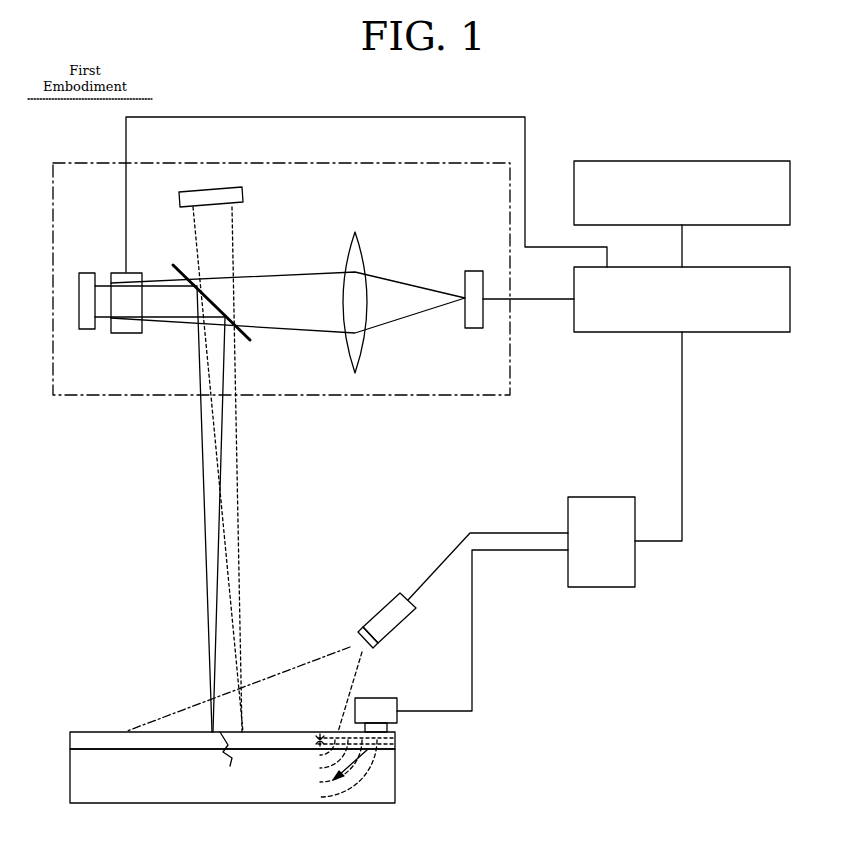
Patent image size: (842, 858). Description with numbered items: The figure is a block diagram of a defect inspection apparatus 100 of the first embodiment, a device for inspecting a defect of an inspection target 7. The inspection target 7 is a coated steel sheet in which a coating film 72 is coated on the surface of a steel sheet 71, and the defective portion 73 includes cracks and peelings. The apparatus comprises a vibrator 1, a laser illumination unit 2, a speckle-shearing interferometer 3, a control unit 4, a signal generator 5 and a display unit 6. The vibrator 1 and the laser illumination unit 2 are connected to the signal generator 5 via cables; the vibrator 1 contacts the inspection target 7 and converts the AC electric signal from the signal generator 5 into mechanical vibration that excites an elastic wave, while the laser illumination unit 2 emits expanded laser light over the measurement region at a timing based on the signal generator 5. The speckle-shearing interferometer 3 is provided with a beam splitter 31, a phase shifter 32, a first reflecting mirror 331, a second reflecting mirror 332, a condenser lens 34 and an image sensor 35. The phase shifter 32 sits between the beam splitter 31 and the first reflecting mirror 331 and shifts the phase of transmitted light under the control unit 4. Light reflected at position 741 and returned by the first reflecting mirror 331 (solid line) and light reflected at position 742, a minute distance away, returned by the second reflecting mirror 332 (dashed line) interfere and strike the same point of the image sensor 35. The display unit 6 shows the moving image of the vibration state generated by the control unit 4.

The defect inspection apparatus 100 is at (738, 134).
The vibrator 1 is at (400, 700).
The laser illumination unit 2 is at (380, 607).
The speckle-shearing interferometer 3 is at (281, 302).
The beam splitter 31 is at (252, 344).
The phase shifter 32 is at (127, 335).
The first reflecting mirror 331 is at (86, 272).
The second reflecting mirror 332 is at (243, 191).
The condenser lens 34 is at (362, 360).
The image sensor 35 is at (471, 270).
The control unit 4 is at (573, 283).
The signal generator 5 is at (637, 576).
The display unit 6 is at (573, 177).
The inspection target 7 is at (211, 749).
The steel sheet 71 is at (68, 778).
The coating film 72 is at (68, 741).
The defective portion 73 is at (226, 765).
The position 741 is at (207, 722).
The position 742 is at (244, 727).